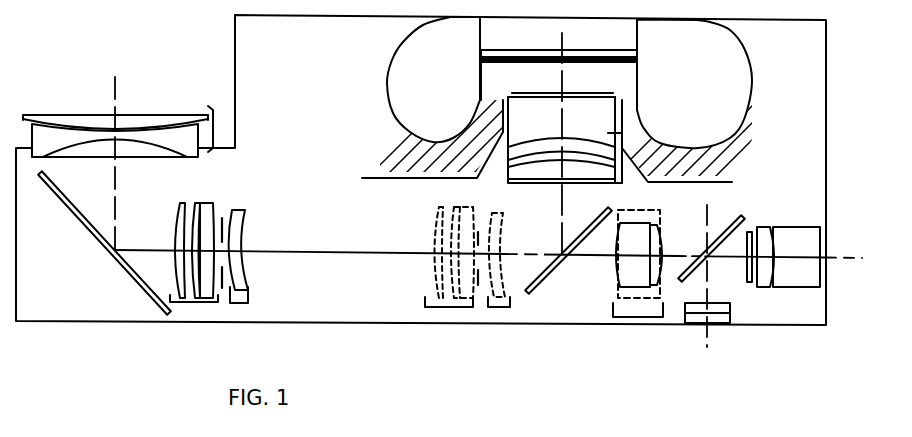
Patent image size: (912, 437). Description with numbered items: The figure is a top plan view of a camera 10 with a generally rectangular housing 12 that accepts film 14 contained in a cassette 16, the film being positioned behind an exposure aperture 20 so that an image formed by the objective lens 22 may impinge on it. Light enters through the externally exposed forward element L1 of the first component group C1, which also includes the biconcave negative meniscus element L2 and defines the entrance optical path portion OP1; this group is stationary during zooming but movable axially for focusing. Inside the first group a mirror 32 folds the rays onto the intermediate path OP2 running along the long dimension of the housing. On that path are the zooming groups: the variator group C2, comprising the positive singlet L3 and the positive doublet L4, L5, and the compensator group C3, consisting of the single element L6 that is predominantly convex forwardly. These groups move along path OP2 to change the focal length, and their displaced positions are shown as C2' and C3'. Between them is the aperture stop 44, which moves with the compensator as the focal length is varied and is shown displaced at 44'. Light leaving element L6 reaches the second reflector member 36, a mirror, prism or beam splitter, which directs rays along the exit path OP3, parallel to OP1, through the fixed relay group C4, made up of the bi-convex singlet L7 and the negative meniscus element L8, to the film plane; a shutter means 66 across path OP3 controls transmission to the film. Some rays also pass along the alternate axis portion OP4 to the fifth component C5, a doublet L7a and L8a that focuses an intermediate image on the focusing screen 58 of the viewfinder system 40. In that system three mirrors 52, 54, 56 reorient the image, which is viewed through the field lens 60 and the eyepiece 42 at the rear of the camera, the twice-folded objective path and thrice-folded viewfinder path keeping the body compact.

The camera 10 is at (592, 32).
The housing 12 is at (356, 17).
The film 14 is at (518, 64).
The cassette 16 is at (386, 97).
The exposure aperture 20 is at (586, 137).
The objective lens 22 is at (142, 130).
The mirror 32 is at (90, 236).
The reflector member 36 is at (539, 284).
The viewfinder system 40 is at (766, 269).
The eyepiece 42 is at (702, 322).
The aperture stop 44 is at (257, 253).
The aperture stop 44' is at (512, 249).
The mirror 52 is at (797, 239).
The mirror 54 is at (797, 228).
The mirror 56 is at (715, 233).
The focusing screen 58 is at (747, 267).
The field lens 60 is at (760, 227).
The shutter means 66 is at (582, 93).
The first component group C1 is at (214, 147).
The variator group C2 is at (194, 325).
The variator group C2' is at (453, 281).
The compensator group C3 is at (263, 317).
The compensator group C3' is at (514, 284).
The relay group C4 is at (624, 172).
The fifth component C5 is at (661, 285).
The forward element L1 is at (62, 118).
The biconcave negative meniscus element L2 is at (62, 142).
The first element L3 is at (178, 210).
The positive doublet element L4 is at (200, 205).
The positive doublet element L5 is at (207, 212).
The single element L6 is at (240, 212).
The bi-convex singlet L7 is at (580, 176).
The negative meniscus element L8 is at (522, 147).
The doublet element L7a is at (633, 255).
The doublet element L8a is at (658, 233).
The optical path portion OP1 is at (116, 166).
The optical path OP2 is at (328, 255).
The optical path portion OP3 is at (560, 203).
The optical axis portion OP4 is at (582, 258).